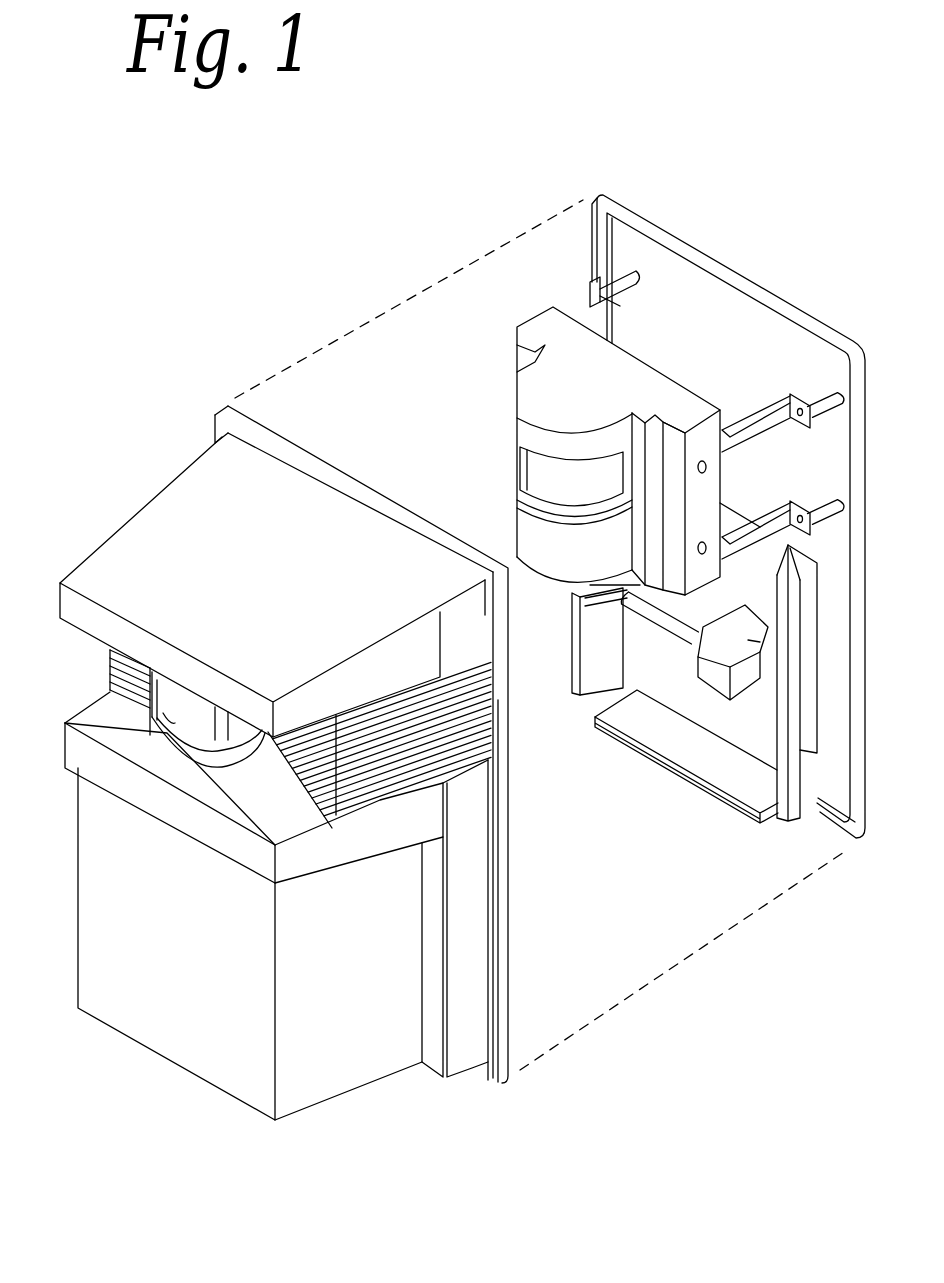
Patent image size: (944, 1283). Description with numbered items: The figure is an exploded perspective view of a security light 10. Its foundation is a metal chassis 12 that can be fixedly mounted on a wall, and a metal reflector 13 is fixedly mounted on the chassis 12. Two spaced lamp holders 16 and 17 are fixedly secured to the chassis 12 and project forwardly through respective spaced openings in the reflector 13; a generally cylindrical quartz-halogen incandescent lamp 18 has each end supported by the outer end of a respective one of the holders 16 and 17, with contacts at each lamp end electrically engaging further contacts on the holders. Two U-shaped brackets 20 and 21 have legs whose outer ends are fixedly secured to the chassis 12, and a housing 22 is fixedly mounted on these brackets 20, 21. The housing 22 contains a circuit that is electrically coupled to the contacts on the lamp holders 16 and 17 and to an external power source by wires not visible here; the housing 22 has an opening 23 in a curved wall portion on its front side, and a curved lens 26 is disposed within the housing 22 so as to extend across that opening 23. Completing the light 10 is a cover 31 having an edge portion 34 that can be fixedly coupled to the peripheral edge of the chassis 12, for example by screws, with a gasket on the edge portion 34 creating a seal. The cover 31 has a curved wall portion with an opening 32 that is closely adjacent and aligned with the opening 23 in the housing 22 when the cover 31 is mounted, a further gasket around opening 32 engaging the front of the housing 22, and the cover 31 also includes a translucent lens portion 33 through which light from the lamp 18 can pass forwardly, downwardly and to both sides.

The security light 10 is at (299, 312).
The metal chassis 12 is at (716, 304).
The metal reflector 13 is at (720, 770).
The lamp holder 16 is at (578, 594).
The lamp holder 17 is at (715, 682).
The incandescent lamp 18 is at (663, 628).
The U-shaped bracket 20 is at (777, 410).
The U-shaped bracket 21 is at (770, 533).
The housing 22 is at (555, 385).
The opening 23 is at (545, 498).
The curved lens 26 is at (543, 466).
The cover 31 is at (188, 504).
The opening 32 is at (150, 703).
The translucent lens portion 33 is at (155, 1013).
The edge portion 34 is at (500, 930).